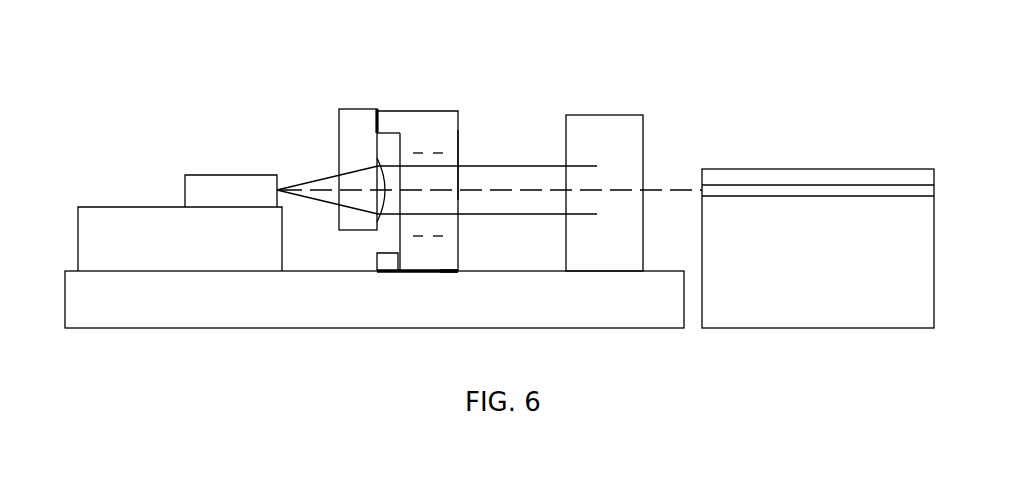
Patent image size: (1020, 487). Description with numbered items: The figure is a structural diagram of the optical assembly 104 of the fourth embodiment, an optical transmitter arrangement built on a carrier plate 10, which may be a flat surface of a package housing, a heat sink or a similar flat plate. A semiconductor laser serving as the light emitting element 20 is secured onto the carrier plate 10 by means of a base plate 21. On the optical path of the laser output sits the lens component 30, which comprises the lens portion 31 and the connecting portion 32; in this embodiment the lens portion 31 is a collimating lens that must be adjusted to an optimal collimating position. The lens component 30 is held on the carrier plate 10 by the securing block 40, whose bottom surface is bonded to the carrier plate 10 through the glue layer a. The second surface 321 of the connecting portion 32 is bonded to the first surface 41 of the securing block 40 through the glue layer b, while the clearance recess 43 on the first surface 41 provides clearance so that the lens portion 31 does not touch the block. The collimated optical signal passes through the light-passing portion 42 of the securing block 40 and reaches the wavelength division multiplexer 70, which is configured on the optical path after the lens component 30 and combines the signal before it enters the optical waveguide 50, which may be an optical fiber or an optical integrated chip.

The optical assembly 104 is at (56, 98).
The carrier plate 10 is at (150, 308).
The light emitting element 20 is at (230, 182).
The base plate 21 is at (153, 218).
The lens component 30 is at (335, 155).
The lens portion 31 is at (350, 197).
The connecting portion 32 is at (347, 122).
The second surface 321 is at (380, 133).
The glue layer a is at (378, 107).
The securing block 40 is at (435, 213).
The first surface 41 is at (377, 257).
The light-passing portion 42 is at (455, 162).
The clearance recess 43 is at (395, 273).
The glue layer b is at (462, 270).
The wavelength division multiplexer 70 is at (595, 120).
The optical waveguide 50 is at (743, 180).